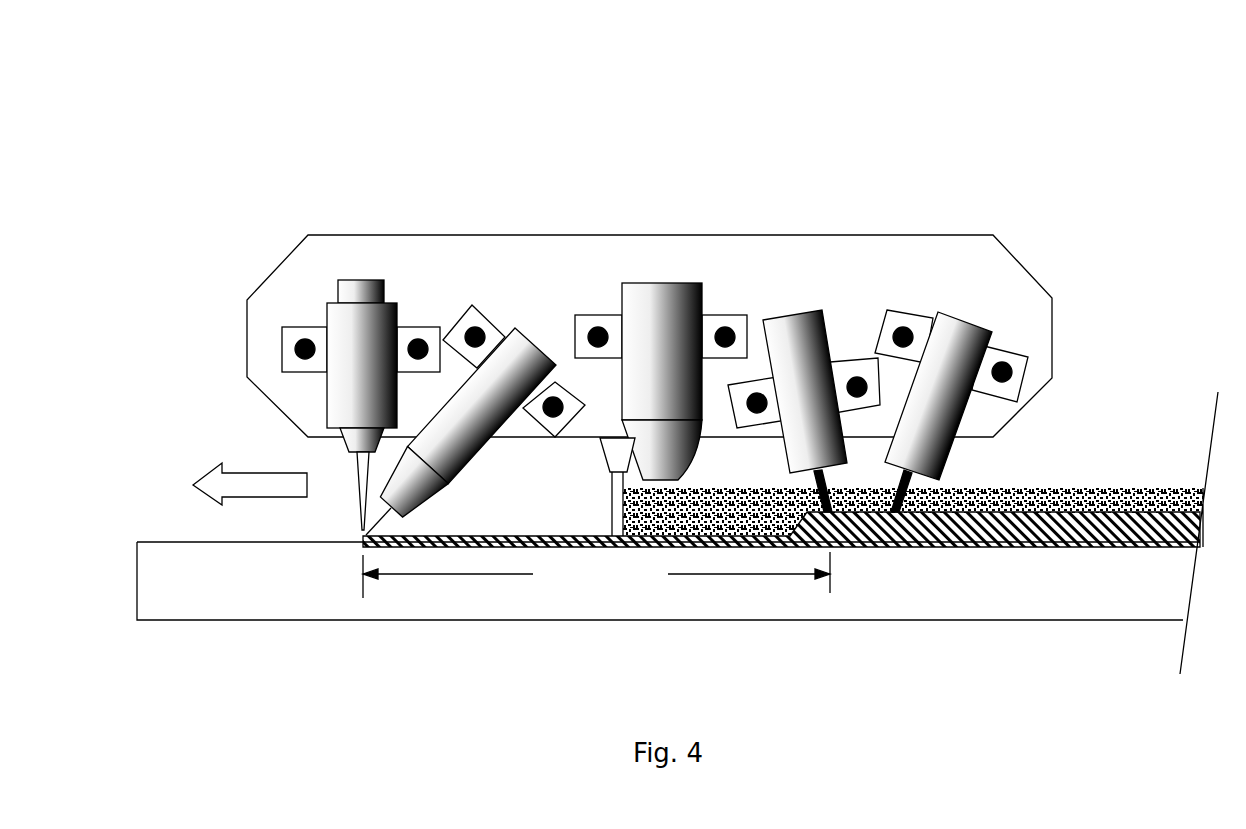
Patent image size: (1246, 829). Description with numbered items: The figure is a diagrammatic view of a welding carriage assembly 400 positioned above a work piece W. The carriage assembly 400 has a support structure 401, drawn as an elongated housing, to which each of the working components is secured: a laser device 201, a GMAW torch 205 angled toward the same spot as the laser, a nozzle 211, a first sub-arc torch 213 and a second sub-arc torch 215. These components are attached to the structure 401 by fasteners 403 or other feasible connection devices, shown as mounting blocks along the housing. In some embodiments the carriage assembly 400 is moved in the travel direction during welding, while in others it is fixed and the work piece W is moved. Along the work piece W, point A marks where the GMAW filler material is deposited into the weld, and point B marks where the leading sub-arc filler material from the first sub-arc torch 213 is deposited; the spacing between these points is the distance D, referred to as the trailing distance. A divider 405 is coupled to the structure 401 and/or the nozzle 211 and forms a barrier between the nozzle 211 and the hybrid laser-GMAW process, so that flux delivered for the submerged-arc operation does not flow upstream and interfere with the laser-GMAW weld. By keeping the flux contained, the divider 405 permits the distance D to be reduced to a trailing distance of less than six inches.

The carriage assembly 400 is at (813, 105).
The support structure 401 is at (1038, 312).
The fasteners 403 is at (283, 347).
The laser device 201 is at (363, 278).
The GMAW torch 205 is at (520, 328).
The nozzle 211 is at (632, 282).
The first sub-arc torch 213 is at (800, 312).
The second sub-arc torch 215 is at (982, 322).
The divider 405 is at (580, 537).
The point A is at (360, 553).
The point B is at (830, 553).
The distance D is at (596, 575).
The work piece W is at (1097, 602).